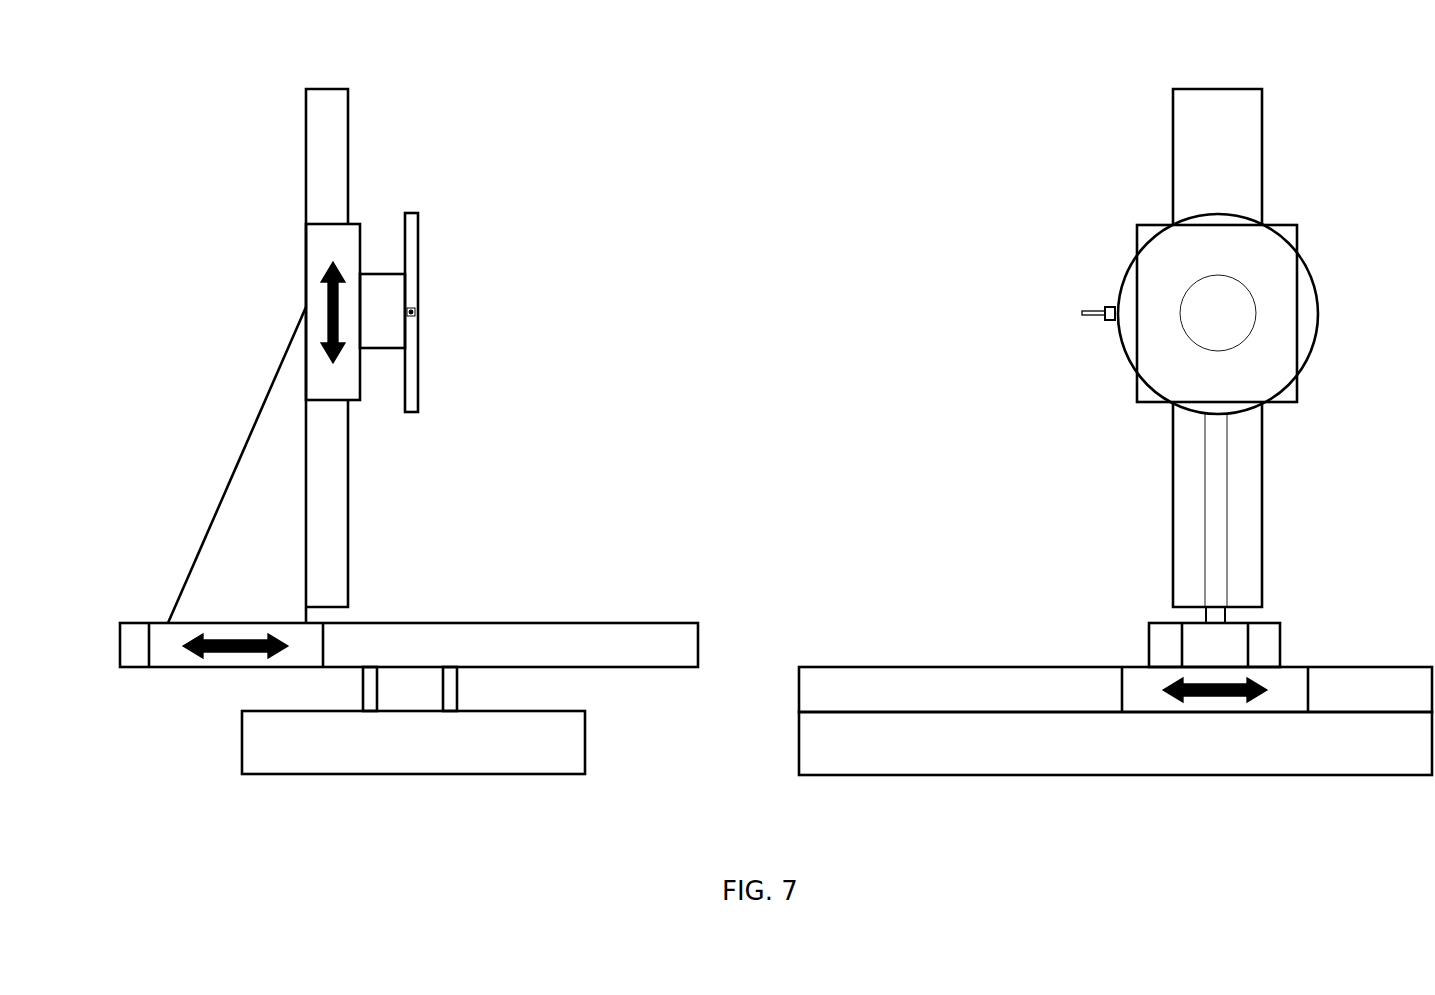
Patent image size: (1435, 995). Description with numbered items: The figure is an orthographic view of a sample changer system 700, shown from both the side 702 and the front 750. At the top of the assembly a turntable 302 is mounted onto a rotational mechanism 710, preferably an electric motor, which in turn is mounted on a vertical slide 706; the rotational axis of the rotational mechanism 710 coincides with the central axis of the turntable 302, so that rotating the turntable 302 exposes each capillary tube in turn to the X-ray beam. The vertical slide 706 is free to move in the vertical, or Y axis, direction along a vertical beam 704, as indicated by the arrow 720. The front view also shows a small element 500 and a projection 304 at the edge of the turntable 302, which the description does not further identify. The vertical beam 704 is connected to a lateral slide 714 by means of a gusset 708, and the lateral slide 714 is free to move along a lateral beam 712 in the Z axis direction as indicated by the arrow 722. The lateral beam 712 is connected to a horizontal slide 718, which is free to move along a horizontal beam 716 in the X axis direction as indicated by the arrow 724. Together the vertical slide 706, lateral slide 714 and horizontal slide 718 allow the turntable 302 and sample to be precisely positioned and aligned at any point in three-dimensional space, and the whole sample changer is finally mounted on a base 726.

The sample changer system 700 is at (823, 148).
The side 702 is at (547, 457).
The front 750 is at (905, 403).
The vertical beam 704 is at (345, 143).
The vertical slide 706 is at (318, 252).
The arrow 720 is at (325, 297).
The rotational mechanism 710 is at (378, 357).
The turntable 302 is at (415, 235).
The sensor head 500 is at (1110, 307).
The probe 304 is at (1088, 317).
The gusset 708 is at (268, 417).
The lateral beam 712 is at (460, 633).
The lateral slide 714 is at (165, 653).
The arrow 722 is at (225, 635).
The horizontal beam 716 is at (432, 703).
The horizontal slide 718 is at (450, 692).
The arrow 724 is at (1218, 702).
The base 726 is at (247, 743).